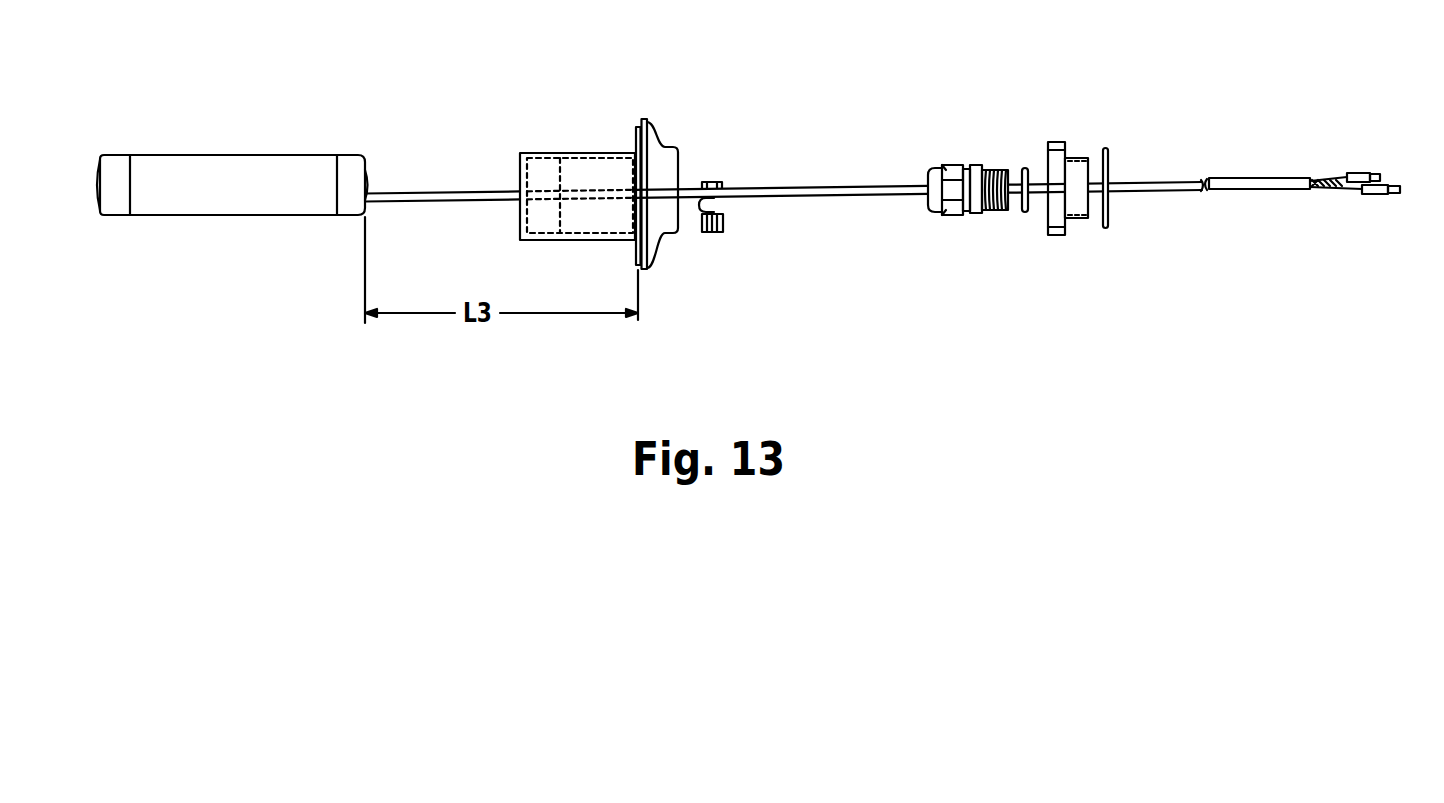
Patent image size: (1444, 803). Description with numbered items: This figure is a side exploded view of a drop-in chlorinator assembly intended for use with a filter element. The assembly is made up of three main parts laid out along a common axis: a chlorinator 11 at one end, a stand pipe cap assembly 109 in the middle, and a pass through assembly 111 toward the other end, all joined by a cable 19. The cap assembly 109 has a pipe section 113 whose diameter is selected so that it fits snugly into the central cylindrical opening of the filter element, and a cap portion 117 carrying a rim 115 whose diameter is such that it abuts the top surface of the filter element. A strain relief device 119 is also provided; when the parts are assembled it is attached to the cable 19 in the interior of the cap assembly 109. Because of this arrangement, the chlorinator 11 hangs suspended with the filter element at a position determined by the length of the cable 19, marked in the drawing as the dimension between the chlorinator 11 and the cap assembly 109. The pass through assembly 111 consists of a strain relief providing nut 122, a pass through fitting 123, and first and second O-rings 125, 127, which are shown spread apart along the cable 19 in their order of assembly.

The chlorinator 11 is at (257, 130).
The cable 19 is at (783, 192).
The stand pipe cap assembly 109 is at (733, 97).
The pipe section 113 is at (580, 152).
The rim 115 is at (645, 121).
The cap portion 117 is at (678, 150).
The strain relief device 119 is at (713, 233).
The pass through assembly 111 is at (1137, 93).
The strain relief providing nut 122 is at (975, 211).
The first O-ring 125 is at (1025, 167).
The pass through fitting 123 is at (1073, 205).
The second O-ring 127 is at (1107, 147).